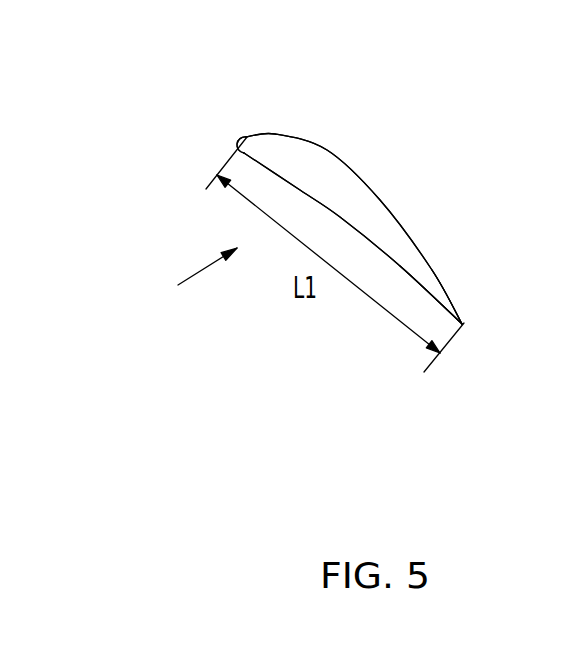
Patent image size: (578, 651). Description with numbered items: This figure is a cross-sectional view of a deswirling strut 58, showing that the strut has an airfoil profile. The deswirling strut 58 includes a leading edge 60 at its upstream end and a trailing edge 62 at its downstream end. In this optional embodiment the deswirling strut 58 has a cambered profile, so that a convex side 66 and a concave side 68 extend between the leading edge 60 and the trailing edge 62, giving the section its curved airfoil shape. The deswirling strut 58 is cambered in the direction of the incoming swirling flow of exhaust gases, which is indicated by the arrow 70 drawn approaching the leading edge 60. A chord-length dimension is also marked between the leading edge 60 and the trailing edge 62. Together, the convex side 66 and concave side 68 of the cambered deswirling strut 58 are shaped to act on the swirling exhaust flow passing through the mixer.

The deswirling strut 58 is at (380, 215).
The leading edge 60 is at (244, 139).
The trailing edge 62 is at (462, 325).
The convex side 66 is at (327, 150).
The concave side 68 is at (402, 266).
The arrow 70 is at (208, 268).